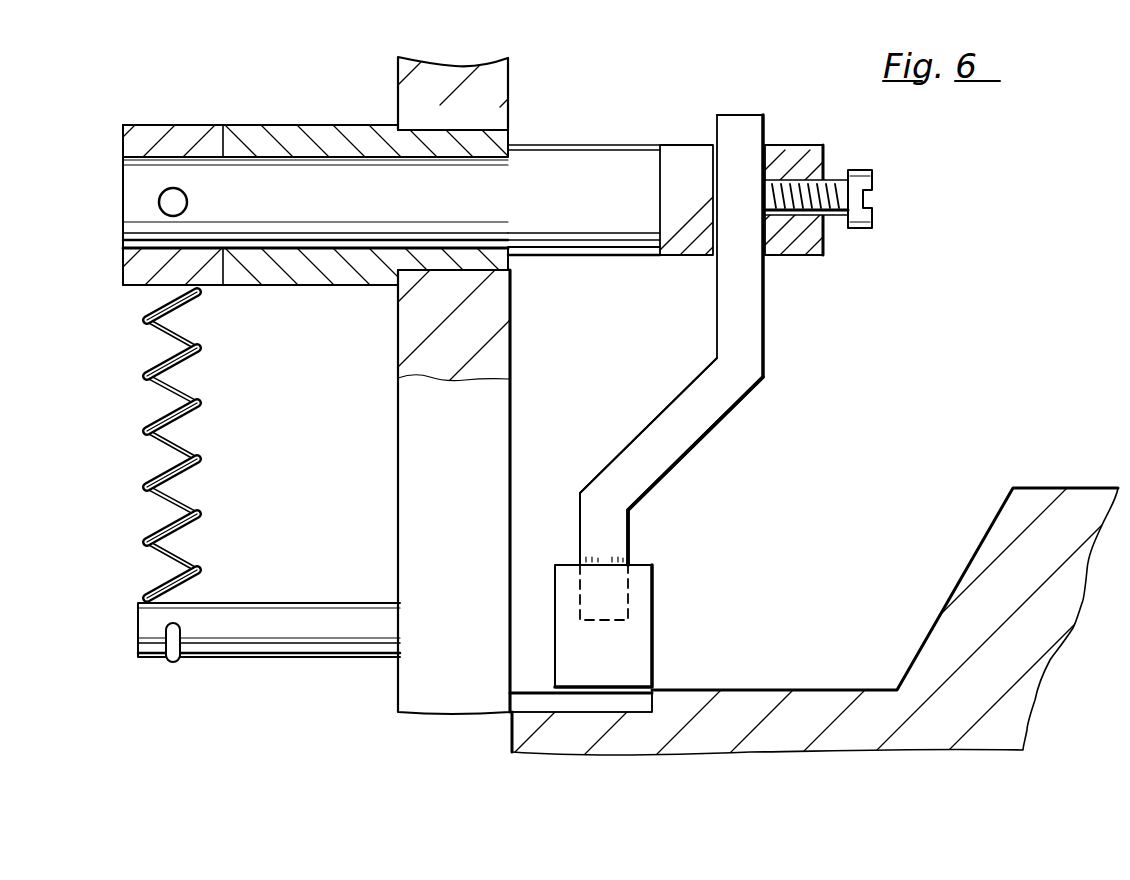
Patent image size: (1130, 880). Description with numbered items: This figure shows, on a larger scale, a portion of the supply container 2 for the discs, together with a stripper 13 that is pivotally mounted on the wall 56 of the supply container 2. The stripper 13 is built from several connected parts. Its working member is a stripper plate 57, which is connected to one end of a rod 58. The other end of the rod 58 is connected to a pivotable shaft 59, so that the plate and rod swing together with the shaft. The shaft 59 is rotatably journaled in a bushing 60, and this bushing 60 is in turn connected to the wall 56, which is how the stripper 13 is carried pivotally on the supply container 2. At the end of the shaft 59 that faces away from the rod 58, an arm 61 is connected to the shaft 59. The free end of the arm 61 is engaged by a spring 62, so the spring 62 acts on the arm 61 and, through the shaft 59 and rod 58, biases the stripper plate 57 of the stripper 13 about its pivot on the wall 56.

The supply container 2 is at (578, 361).
The stripper 13 is at (687, 477).
The wall 56 is at (398, 378).
The stripper plate 57 is at (635, 647).
The rod 58 is at (757, 342).
The pivotable shaft 59 is at (642, 153).
The bushing 60 is at (488, 148).
The arm 61 is at (165, 200).
The spring 62 is at (143, 378).